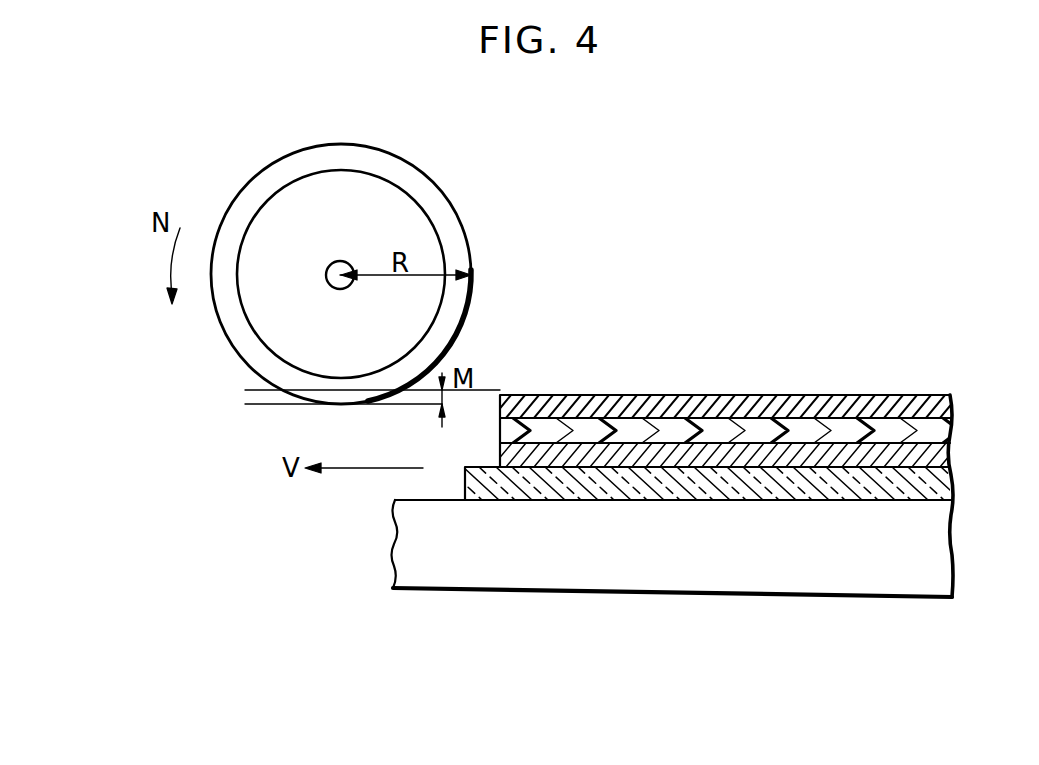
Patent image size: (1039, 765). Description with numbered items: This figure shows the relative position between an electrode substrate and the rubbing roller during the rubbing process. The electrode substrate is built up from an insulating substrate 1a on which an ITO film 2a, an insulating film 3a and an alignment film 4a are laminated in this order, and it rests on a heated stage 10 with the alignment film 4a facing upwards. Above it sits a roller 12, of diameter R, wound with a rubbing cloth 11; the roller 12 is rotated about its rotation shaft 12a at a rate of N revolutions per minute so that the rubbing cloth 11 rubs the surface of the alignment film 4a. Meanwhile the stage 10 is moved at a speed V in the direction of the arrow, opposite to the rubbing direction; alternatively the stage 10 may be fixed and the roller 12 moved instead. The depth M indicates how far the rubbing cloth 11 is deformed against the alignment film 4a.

The rubbing cloth 11 is at (445, 187).
The roller 12 is at (288, 200).
The rotation shaft 12a is at (327, 281).
The alignment film 4a is at (930, 410).
The insulating film 3a is at (937, 440).
The ITO film 2a is at (940, 458).
The insulating substrate 1a is at (940, 495).
The stage 10 is at (680, 582).